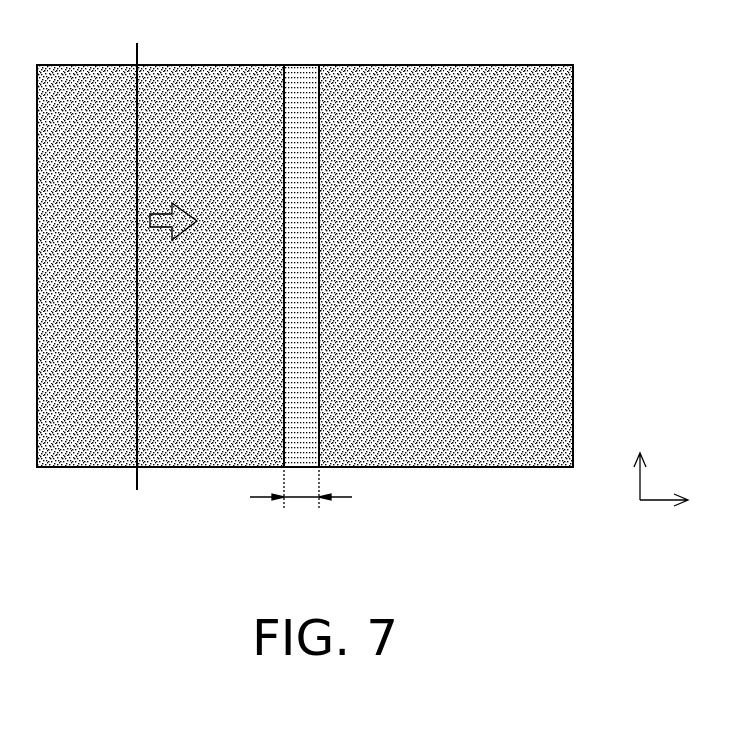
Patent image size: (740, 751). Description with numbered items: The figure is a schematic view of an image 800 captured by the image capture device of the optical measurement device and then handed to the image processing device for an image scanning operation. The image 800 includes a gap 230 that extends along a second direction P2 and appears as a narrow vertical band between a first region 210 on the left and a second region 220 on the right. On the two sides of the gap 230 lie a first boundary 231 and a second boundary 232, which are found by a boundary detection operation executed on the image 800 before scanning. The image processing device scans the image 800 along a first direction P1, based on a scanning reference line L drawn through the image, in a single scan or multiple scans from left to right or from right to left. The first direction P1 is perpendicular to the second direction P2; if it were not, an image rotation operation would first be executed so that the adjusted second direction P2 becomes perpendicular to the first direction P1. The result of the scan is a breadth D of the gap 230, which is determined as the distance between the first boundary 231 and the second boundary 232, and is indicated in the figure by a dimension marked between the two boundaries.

The image 800 is at (575, 195).
The first region 210 is at (90, 72).
The second region 220 is at (466, 66).
The gap 230 is at (302, 80).
The first boundary 231 is at (284, 115).
The second boundary 232 is at (319, 112).
The scanning reference line L is at (135, 248).
The breadth of the gap D is at (301, 504).
The first direction P1 is at (680, 501).
The second direction P2 is at (642, 455).